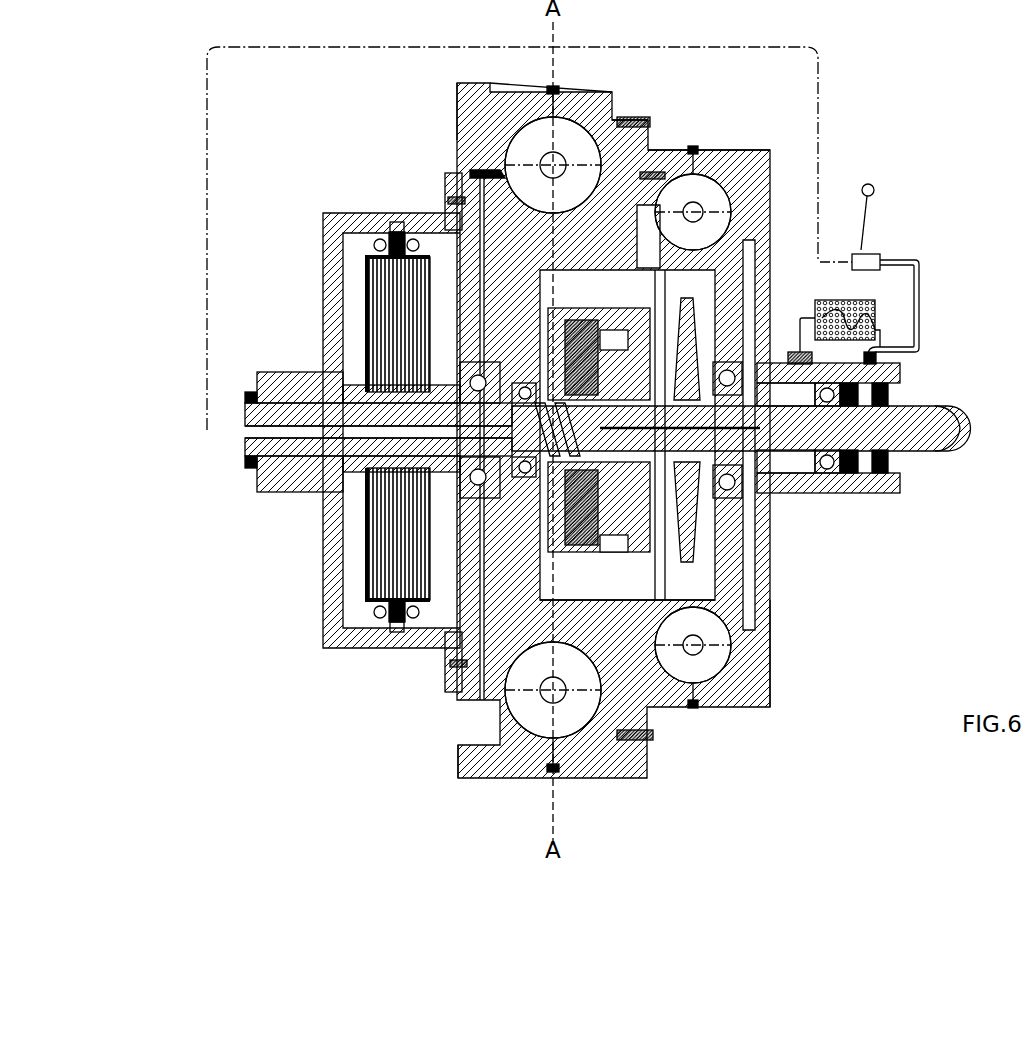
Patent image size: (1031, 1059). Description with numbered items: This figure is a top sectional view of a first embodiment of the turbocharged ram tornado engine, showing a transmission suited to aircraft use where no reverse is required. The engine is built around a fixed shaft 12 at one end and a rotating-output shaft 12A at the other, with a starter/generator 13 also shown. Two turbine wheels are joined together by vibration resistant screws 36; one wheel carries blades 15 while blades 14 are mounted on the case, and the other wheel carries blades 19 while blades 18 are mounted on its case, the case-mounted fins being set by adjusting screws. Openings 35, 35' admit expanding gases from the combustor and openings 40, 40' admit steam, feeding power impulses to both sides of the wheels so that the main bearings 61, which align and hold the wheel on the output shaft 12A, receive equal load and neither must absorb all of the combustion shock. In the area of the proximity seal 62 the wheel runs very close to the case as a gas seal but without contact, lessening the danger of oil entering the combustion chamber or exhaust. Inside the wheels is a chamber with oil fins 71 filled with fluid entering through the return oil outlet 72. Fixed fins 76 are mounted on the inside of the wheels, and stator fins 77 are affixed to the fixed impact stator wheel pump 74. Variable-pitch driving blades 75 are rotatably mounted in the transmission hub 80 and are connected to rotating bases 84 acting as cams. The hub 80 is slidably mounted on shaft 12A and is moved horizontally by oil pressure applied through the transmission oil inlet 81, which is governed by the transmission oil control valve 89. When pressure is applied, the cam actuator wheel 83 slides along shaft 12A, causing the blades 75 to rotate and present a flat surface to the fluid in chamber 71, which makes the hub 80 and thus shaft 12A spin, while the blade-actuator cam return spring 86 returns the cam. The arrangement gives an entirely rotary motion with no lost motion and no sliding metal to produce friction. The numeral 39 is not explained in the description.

The fixed shaft 12 is at (262, 420).
The rotating-output shaft 12A is at (905, 420).
The starter/generator 13 is at (393, 292).
The blades 14 is at (540, 128).
The blades 15 is at (565, 195).
The blades 18 is at (690, 190).
The blades 19 is at (740, 262).
The opening 35 is at (428, 753).
The opening 35' is at (410, 74).
The vibration resistant screws 36 is at (652, 175).
The parting line 39 is at (707, 235).
The opening 40 is at (675, 393).
The opening 40' is at (845, 653).
The main bearings 61 is at (740, 360).
The proximity seal 62 is at (496, 178).
The chamber 71 is at (633, 573).
The return oil outlet 72 is at (262, 440).
The impact stator wheel pump 74 is at (690, 510).
The variable-pitch driving blades 75 is at (608, 300).
The fixed fins 76 is at (705, 290).
The stator fins 77 is at (705, 520).
The transmission hub 80 is at (650, 493).
The transmission oil inlet 81 is at (877, 372).
The cam actuator wheel 83 is at (548, 480).
The rotating bases 84 is at (612, 528).
The blade-actuator cam return spring 86 is at (530, 478).
The transmission oil control valve 89 is at (883, 262).